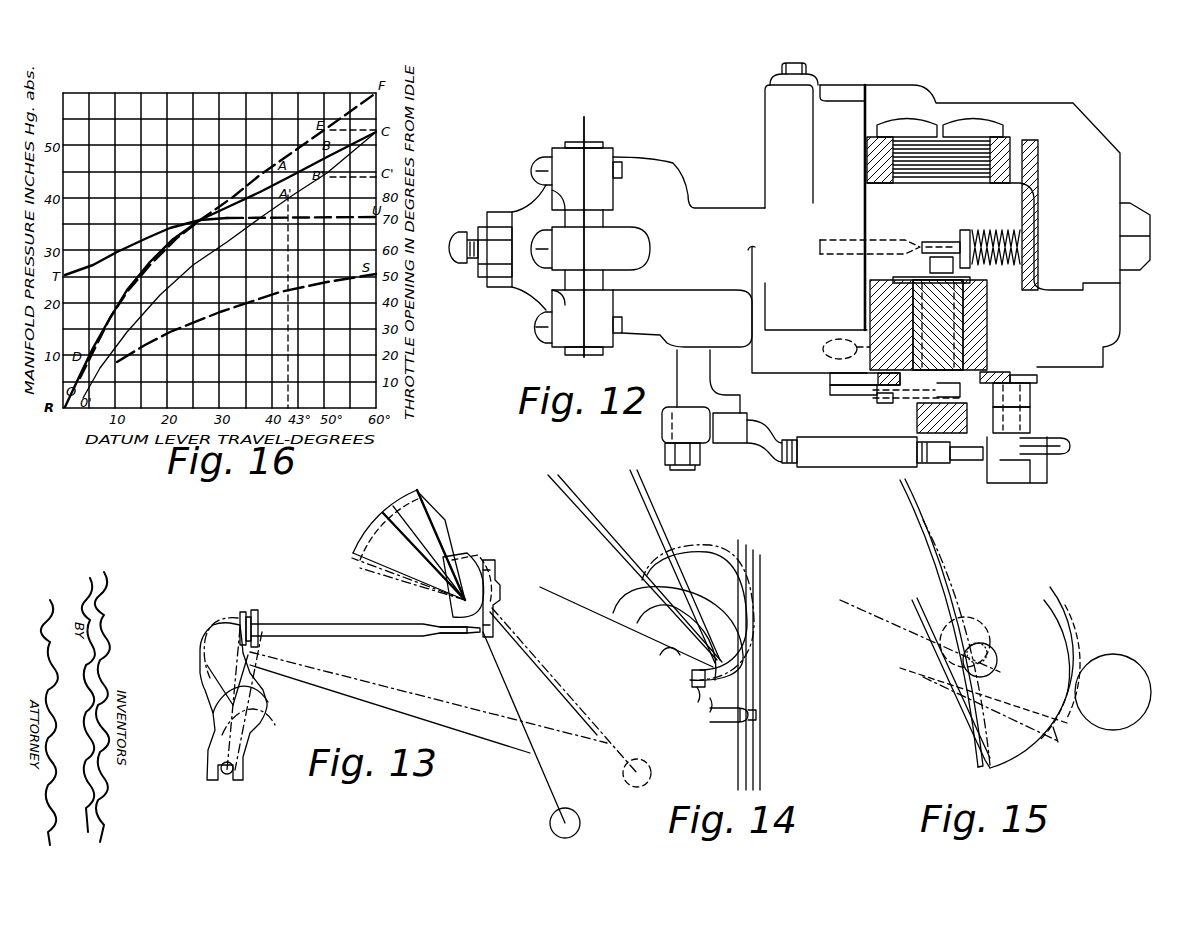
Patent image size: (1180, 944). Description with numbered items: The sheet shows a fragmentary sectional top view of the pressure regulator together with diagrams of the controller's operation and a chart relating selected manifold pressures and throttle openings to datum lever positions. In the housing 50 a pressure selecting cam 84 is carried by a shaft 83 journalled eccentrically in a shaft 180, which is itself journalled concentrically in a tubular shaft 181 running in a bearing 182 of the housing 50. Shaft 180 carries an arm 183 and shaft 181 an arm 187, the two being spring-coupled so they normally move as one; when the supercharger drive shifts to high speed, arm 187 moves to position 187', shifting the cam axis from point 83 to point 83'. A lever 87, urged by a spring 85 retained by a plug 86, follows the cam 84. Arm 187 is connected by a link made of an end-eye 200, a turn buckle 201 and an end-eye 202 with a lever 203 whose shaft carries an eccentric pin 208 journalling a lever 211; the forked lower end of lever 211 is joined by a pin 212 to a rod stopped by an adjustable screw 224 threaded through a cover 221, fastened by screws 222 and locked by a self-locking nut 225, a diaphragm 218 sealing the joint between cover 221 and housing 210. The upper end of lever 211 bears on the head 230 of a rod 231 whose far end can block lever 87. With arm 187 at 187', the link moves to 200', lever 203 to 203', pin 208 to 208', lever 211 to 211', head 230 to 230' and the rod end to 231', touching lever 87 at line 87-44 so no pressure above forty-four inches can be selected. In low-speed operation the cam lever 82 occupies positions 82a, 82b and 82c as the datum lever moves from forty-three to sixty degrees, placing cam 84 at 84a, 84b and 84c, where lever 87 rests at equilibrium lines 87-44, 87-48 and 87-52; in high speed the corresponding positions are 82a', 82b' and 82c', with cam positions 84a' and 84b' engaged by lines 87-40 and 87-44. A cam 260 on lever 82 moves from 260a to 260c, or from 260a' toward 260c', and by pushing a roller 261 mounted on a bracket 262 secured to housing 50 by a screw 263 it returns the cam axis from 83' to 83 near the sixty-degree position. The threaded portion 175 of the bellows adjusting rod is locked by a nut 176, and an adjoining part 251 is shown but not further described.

In FIG. 12, the housing 50 is at (1040, 193).
In FIG. 12, the cam lever 82 is at (917, 420).
In FIG. 13, the cam lever position 82a is at (376, 536).
In FIG. 14, the cam lever position 82a is at (662, 566).
In FIG. 15, the cam lever position 82a is at (938, 623).
In FIG. 13, the cam lever position 82a' is at (382, 544).
In FIG. 14, the cam lever position 82a' is at (678, 565).
In FIG. 15, the cam lever position 82a' is at (947, 623).
In FIG. 13, the lever arm edge 82b is at (368, 556).
In FIG. 14, the lever arm edge 82b is at (632, 567).
In FIG. 13, the cam lever position 82b' is at (372, 553).
In FIG. 14, the cam lever position 82b' is at (640, 568).
In FIG. 13, the cam lever position 82c is at (393, 579).
In FIG. 15, the cam lever position 82c is at (953, 661).
In FIG. 13, the lever center line (displaced) 82c' is at (393, 588).
In FIG. 14, the lever center line (displaced) 82c' is at (626, 627).
In FIG. 12, the cam shaft 83 is at (888, 308).
In FIG. 14, the cam shaft 83 is at (679, 702).
In FIG. 15, the cam shaft 83 is at (976, 660).
In FIG. 14, the shifted cam shaft axis 83' is at (690, 716).
In FIG. 15, the shifted cam shaft axis 83' is at (998, 660).
In FIG. 12, the pressure selecting cam 84 is at (936, 242).
In FIG. 13, the cam position 84a is at (391, 566).
In FIG. 14, the cam position 84a is at (697, 600).
In FIG. 13, the cam position 84a' is at (472, 564).
In FIG. 14, the cam position 84a' is at (698, 596).
In FIG. 14, the cam position 84b is at (665, 634).
In FIG. 14, the cam position 84b' is at (659, 642).
In FIG. 14, the cam position 84c is at (670, 665).
In FIG. 12, the spring 85 is at (1000, 230).
In FIG. 12, the plug 86 is at (1135, 226).
In FIG. 12, the lever 87 is at (964, 230).
In FIG. 13, the lever equilibrium position 87-40 is at (497, 572).
In FIG. 14, the lever equilibrium position 87-40 is at (760, 562).
In FIG. 13, the lever equilibrium position 87-44 is at (495, 562).
In FIG. 14, the lever equilibrium position 87-44 is at (753, 550).
In FIG. 14, the lever equilibrium position 87-48 is at (746, 545).
In FIG. 14, the lever equilibrium position 87-52 is at (738, 540).
In FIG. 12, the threaded portion 175 is at (782, 66).
In FIG. 12, the lock nut 176 is at (770, 80).
In FIG. 12, the shaft 180 is at (950, 318).
In FIG. 12, the tubular shaft 181 is at (965, 340).
In FIG. 12, the bearing 182 is at (987, 300).
In FIG. 12, the arm 183 is at (925, 400).
In FIG. 12, the arm 187 is at (954, 419).
In FIG. 13, the arm 187 is at (531, 735).
In FIG. 13, the arm position 187' is at (570, 697).
In FIG. 12, the end-eye 200 is at (950, 461).
In FIG. 13, the link (displaced) 200' is at (428, 702).
In FIG. 12, the turn buckle 201 is at (830, 437).
In FIG. 12, the end-eye 202 is at (738, 413).
In FIG. 12, the lever 203 is at (688, 395).
In FIG. 13, the lever 203 is at (196, 699).
In FIG. 13, the lever arm (displaced) 203' is at (270, 701).
In FIG. 13, the eccentric pin 208 is at (210, 699).
In FIG. 13, the lever lobe (displaced) 208' is at (256, 726).
In FIG. 12, the housing 210 is at (628, 158).
In FIG. 13, the lever 211 is at (212, 701).
In FIG. 13, the lever position 211' is at (205, 646).
In FIG. 13, the pin 212 is at (226, 775).
In FIG. 12, the diaphragm 218 is at (585, 227).
In FIG. 12, the cover 221 is at (565, 145).
In FIG. 12, the screws 222 is at (545, 160).
In FIG. 12, the adjustable stop screw 224 is at (458, 232).
In FIG. 12, the self-locking nut 225 is at (493, 227).
In FIG. 13, the head 230 is at (335, 618).
In FIG. 13, the head position 230' is at (259, 614).
In FIG. 12, the rod 231 is at (870, 239).
In FIG. 13, the rod 231 is at (443, 645).
In FIG. 14, the rod 231 is at (714, 733).
In FIG. 13, the rod end position 231' is at (455, 654).
In FIG. 14, the rod end position 231' is at (722, 744).
In FIG. 12, the bracket 251 is at (1007, 468).
In FIG. 12, the cam 260 is at (1000, 412).
In FIG. 15, the cam position 260a is at (951, 693).
In FIG. 15, the cam position 260a' is at (988, 683).
In FIG. 15, the cam position 260c is at (1031, 679).
In FIG. 15, the cam position 260c' is at (1094, 662).
In FIG. 12, the roller 261 is at (1030, 420).
In FIG. 15, the roller 261 is at (1107, 730).
In FIG. 12, the bracket 262 is at (873, 377).
In FIG. 12, the screw 263 is at (895, 398).